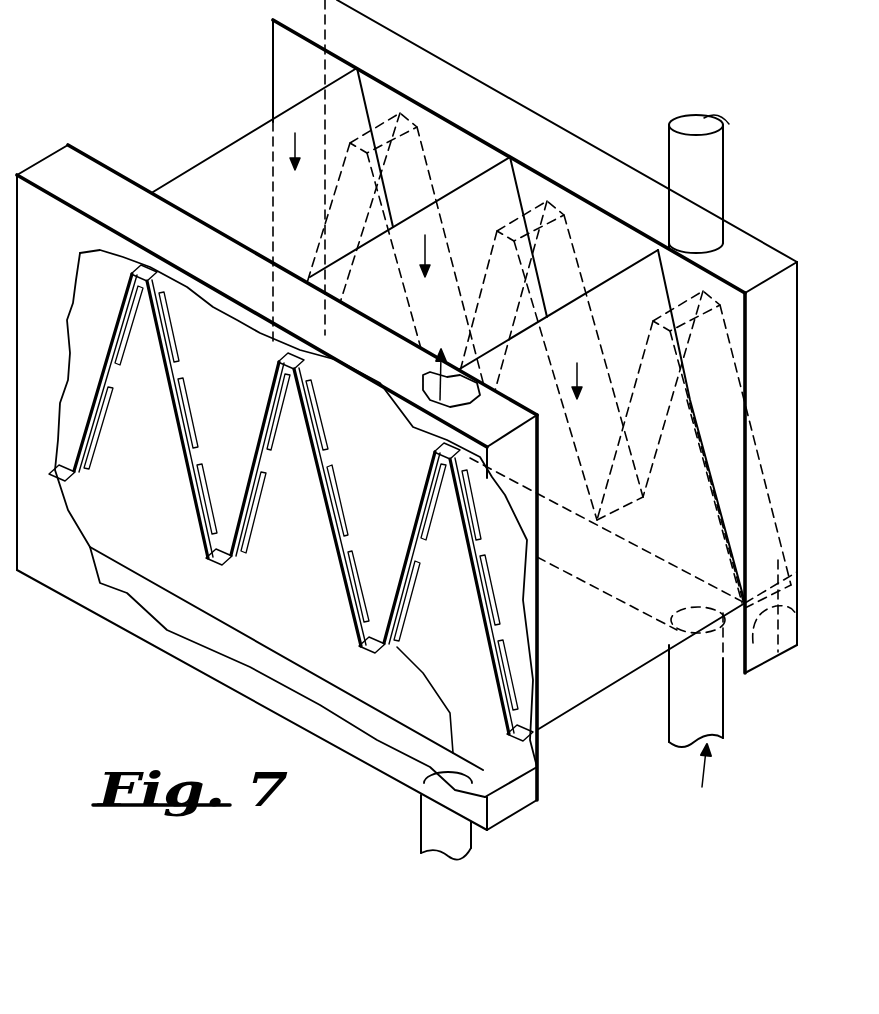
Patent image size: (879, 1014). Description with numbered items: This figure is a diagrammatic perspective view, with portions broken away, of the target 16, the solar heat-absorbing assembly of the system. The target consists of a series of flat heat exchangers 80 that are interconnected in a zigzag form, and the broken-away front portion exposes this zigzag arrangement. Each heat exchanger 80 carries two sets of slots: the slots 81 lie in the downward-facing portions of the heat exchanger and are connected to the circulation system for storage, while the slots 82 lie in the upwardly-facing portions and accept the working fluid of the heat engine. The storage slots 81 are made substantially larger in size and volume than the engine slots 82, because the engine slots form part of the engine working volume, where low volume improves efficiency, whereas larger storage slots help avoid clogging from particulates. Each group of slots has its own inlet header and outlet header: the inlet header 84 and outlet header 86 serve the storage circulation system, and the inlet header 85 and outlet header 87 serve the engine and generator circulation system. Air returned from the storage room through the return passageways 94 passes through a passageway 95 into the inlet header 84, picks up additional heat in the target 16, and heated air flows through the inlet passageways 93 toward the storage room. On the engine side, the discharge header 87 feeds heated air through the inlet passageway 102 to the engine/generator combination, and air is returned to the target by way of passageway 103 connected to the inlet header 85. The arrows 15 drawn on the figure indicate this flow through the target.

The air flow arrows 15 is at (296, 171).
The target 16 is at (238, 699).
The flat heat exchanger 80 is at (603, 667).
The slots 81 is at (275, 475).
The slots 82 is at (414, 434).
The inlet header 84 is at (773, 640).
The inlet header 85 is at (605, 232).
The outlet header 86 is at (310, 683).
The outlet header 87 is at (412, 393).
The inlet passageways 93 is at (440, 838).
The return passageways 94 is at (735, 816).
The passageway 95 is at (733, 738).
The inlet passageway 102 is at (449, 359).
The passageway 103 is at (803, 88).